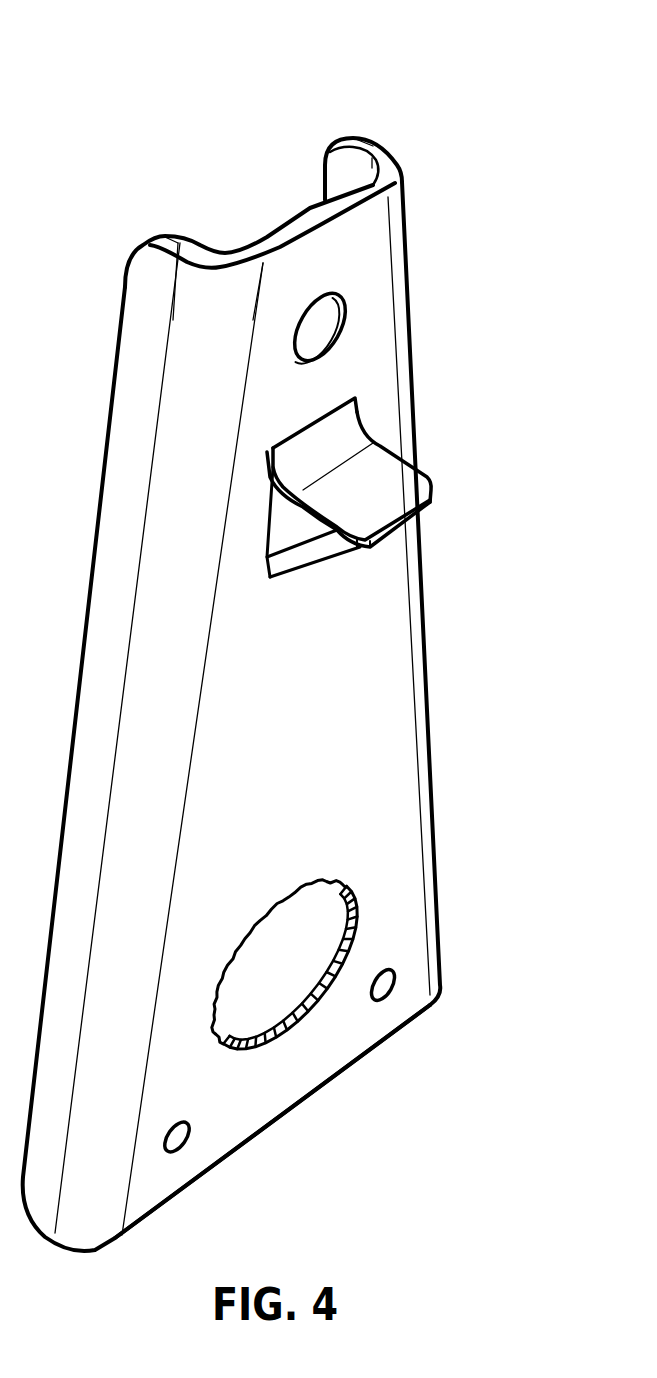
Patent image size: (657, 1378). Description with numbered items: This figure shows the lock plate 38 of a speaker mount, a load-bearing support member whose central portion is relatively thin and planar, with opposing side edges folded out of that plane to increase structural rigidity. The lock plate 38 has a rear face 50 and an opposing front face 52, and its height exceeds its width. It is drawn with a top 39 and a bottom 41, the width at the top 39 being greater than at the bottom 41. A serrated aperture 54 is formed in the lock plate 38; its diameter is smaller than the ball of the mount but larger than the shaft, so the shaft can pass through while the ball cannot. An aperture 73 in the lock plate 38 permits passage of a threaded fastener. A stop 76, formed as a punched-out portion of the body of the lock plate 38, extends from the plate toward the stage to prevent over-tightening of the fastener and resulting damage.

The lock plate 38 is at (237, 68).
The top 39 is at (403, 138).
The rear face 50 is at (227, 223).
The front face 52 is at (370, 668).
The serrated aperture 54 is at (310, 930).
The aperture 73 is at (347, 328).
The stop 76 is at (410, 487).
The bottom 41 is at (317, 1108).